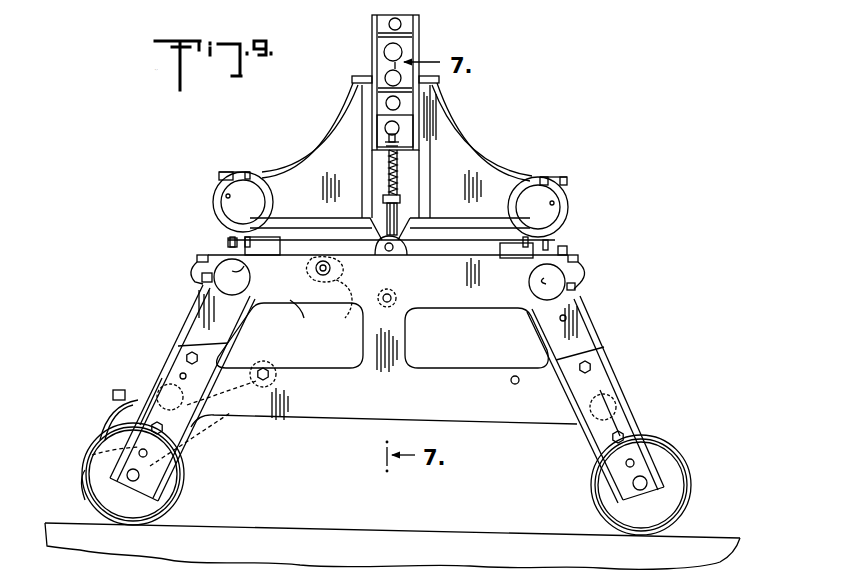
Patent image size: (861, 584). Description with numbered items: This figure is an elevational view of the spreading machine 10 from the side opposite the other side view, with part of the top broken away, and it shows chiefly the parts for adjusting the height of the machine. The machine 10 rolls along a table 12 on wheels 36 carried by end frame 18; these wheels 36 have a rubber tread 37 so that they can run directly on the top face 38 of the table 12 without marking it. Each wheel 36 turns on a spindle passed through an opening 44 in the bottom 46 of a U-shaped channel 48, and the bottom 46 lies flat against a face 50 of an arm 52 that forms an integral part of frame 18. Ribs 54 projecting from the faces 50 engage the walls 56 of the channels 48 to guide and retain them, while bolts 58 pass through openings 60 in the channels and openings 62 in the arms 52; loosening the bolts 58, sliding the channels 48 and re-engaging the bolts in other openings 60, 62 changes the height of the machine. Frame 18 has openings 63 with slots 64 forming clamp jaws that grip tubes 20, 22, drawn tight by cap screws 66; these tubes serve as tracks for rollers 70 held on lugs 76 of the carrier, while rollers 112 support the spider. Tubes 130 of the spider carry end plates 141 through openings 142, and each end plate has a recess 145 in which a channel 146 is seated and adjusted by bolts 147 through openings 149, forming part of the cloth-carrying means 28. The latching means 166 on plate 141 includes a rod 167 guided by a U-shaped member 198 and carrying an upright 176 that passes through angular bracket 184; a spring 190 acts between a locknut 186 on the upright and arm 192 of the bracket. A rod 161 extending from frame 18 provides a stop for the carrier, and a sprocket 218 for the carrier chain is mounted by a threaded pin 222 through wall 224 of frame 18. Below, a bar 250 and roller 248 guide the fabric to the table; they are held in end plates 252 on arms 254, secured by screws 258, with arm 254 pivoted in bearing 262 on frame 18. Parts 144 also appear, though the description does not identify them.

The machine 10 is at (595, 258).
The table 12 is at (353, 500).
The end frame 18 is at (598, 308).
The tube 20 is at (241, 285).
The tube 22 is at (548, 289).
The cloth-carrying means 28 is at (482, 140).
The wheels 36 is at (179, 496).
The tread 37 is at (88, 505).
The top face 38 is at (292, 511).
The openings 44 is at (141, 477).
The bottoms 46 is at (126, 487).
The channels 48 is at (178, 367).
The faces 50 is at (200, 310).
The arms 52 is at (604, 347).
The ribs 54 is at (187, 330).
The walls 56 is at (200, 358).
The bolts 58 is at (196, 352).
The openings 60 is at (139, 452).
The openings 62 is at (174, 353).
The openings 63 is at (236, 271).
The slot 64 is at (196, 259).
The cap screws 66 is at (228, 247).
The rollers 70 is at (230, 238).
The lugs 76 is at (272, 243).
The rollers 112 is at (262, 240).
The tubes 130 is at (250, 190).
The end plates 141 is at (478, 182).
The openings 142 is at (227, 195).
The clamp screw 144 is at (225, 172).
The recess 145 is at (400, 186).
The channel 146 is at (372, 21).
The bolts 147 is at (386, 72).
The openings 149 is at (401, 24).
The rod 161 is at (388, 298).
The latching means 166 is at (380, 168).
The rod 167 is at (398, 252).
The upright 176 is at (372, 213).
The angular bracket 184 is at (382, 132).
The locknut 186 is at (400, 199).
The spring 190 is at (404, 170).
The arm 192 is at (385, 143).
The U-shaped member 198 is at (398, 218).
The sprocket 218 is at (302, 306).
The threaded pin 222 is at (340, 257).
The wall 224 is at (302, 306).
The roller 248 is at (80, 486).
The bar 250 is at (108, 412).
The end plates 252 is at (92, 455).
The arms 254 is at (230, 415).
The screws 258 is at (113, 394).
The bearing 262 is at (266, 372).